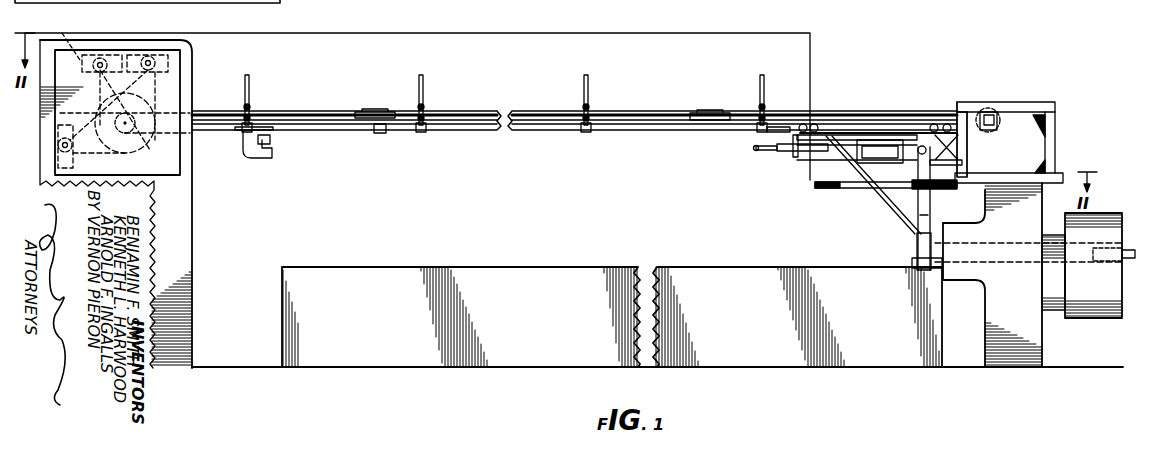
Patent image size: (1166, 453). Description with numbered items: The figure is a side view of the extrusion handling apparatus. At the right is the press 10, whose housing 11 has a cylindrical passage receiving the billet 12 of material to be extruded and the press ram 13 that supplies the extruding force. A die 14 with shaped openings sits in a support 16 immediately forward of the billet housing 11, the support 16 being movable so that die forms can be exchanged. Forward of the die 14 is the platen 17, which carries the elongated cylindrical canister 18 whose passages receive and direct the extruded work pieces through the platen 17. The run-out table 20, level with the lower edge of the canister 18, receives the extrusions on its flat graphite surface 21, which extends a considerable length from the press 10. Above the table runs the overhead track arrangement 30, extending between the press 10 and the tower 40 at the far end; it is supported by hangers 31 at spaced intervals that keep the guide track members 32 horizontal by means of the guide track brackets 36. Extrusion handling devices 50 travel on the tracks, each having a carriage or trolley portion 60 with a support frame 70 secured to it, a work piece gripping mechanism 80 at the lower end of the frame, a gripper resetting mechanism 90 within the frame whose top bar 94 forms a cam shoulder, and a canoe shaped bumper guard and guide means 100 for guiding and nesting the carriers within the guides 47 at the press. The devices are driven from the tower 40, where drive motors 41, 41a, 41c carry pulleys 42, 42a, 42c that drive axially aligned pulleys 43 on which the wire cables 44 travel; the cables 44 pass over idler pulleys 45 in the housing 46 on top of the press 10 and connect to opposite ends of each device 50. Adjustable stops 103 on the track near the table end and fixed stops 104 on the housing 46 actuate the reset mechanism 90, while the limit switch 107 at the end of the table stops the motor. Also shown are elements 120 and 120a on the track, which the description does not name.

The press 10 is at (1049, 336).
The housing 11 is at (1090, 319).
The billet 12 is at (1076, 251).
The press ram 13 is at (1130, 259).
The die 14 is at (1050, 259).
The support 16 is at (1052, 234).
The platen 17 is at (996, 325).
The canister 18 is at (978, 243).
The run-out table 20 is at (509, 280).
The graphite surface 21 is at (541, 268).
The overhead track arrangement 30 is at (640, 110).
The hangers 31 is at (250, 82).
The guide track members 32 is at (380, 133).
The guide track brackets 36 is at (252, 122).
The tower 40 is at (197, 217).
The drive motor 41 is at (66, 132).
The drive motor 41a is at (183, 68).
The drive motor 41c is at (57, 36).
The pulley 42 is at (57, 161).
The pulley 42a is at (150, 55).
The pulley 42c is at (100, 54).
The axially aligned pulleys 43 is at (136, 133).
The wire cables 44 is at (307, 110).
The idler pulleys 45 is at (993, 108).
The housing 46 is at (1058, 141).
The guides 47 is at (936, 184).
The extrusion handling devices 50 is at (874, 206).
The carriage or trolley portion 60 is at (920, 120).
The support frame 70 is at (833, 161).
The work piece gripping mechanism 80 is at (910, 251).
The gripper resetting mechanism 90 is at (766, 150).
The top bar 94 is at (778, 150).
The bumper guard and guide means 100 is at (827, 190).
The adjustable stops 103 is at (251, 155).
The fixed stops 104 is at (963, 145).
The limit switch 107 is at (272, 140).
The clip 120 is at (386, 110).
The clip 120a is at (712, 110).